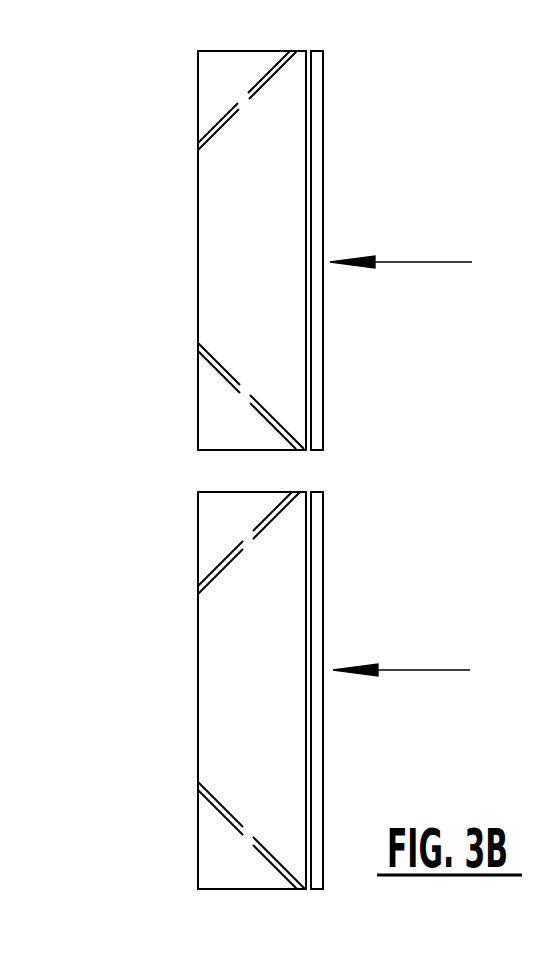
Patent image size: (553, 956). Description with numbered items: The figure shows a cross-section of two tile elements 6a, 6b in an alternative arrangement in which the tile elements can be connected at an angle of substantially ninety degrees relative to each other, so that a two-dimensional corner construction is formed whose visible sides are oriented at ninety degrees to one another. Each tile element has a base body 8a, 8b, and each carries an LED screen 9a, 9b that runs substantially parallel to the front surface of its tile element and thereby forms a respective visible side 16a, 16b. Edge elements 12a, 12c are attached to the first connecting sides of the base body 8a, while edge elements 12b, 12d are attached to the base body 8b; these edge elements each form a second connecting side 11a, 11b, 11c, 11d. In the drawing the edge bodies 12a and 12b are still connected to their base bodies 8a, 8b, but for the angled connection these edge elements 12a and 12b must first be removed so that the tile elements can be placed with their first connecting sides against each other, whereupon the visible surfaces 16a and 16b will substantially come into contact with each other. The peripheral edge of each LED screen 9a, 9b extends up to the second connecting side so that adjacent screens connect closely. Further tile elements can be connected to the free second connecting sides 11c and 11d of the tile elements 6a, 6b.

The first tile element 6a is at (284, 256).
The second tile element 6b is at (283, 682).
The base body of the first tile element 8a is at (212, 270).
The base body of the second tile element 8b is at (215, 668).
The LED screen of the first tile element 9a is at (320, 143).
The LED screen of the second tile element 9b is at (317, 582).
The second connecting side 11a is at (182, 479).
The second connecting side 11b is at (367, 469).
The free second connecting side 11c is at (306, 32).
The free second connecting side 11d is at (208, 905).
The edge element of the first tile element 12a is at (247, 393).
The edge element of the second tile element 12b is at (243, 530).
The edge element of the first tile element 12c is at (242, 108).
The edge element of the second tile element 12d is at (247, 842).
The visible side of the first tile element 16a is at (427, 260).
The visible side of the second tile element 16b is at (427, 670).